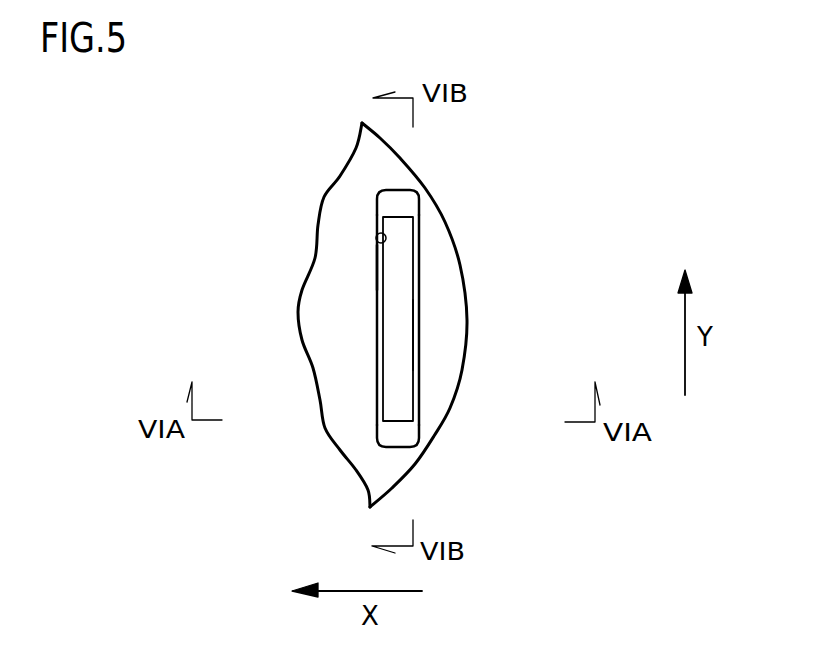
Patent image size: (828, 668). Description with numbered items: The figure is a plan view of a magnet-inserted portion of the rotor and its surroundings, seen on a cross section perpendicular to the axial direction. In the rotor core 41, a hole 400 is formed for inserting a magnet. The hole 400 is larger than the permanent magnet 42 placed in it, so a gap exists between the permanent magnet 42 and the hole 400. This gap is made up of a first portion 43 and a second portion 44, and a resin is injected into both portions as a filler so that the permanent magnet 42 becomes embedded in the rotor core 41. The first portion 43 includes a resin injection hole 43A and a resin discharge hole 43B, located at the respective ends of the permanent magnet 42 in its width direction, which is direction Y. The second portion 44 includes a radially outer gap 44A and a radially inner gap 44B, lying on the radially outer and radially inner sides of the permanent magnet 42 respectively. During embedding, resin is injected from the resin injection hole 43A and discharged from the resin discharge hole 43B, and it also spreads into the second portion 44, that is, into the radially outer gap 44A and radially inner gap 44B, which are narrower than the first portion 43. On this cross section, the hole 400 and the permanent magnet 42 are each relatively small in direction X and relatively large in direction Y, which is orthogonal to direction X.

The rotor core 41 is at (375, 182).
The hole 400 is at (378, 237).
The permanent magnet 42 is at (395, 395).
The first portion 43 is at (470, 320).
The resin injection hole 43A is at (445, 438).
The resin discharge hole 43B is at (410, 203).
The second portion 44 is at (294, 302).
The radially outer gap 44A is at (413, 335).
The radially inner gap 44B is at (378, 265).